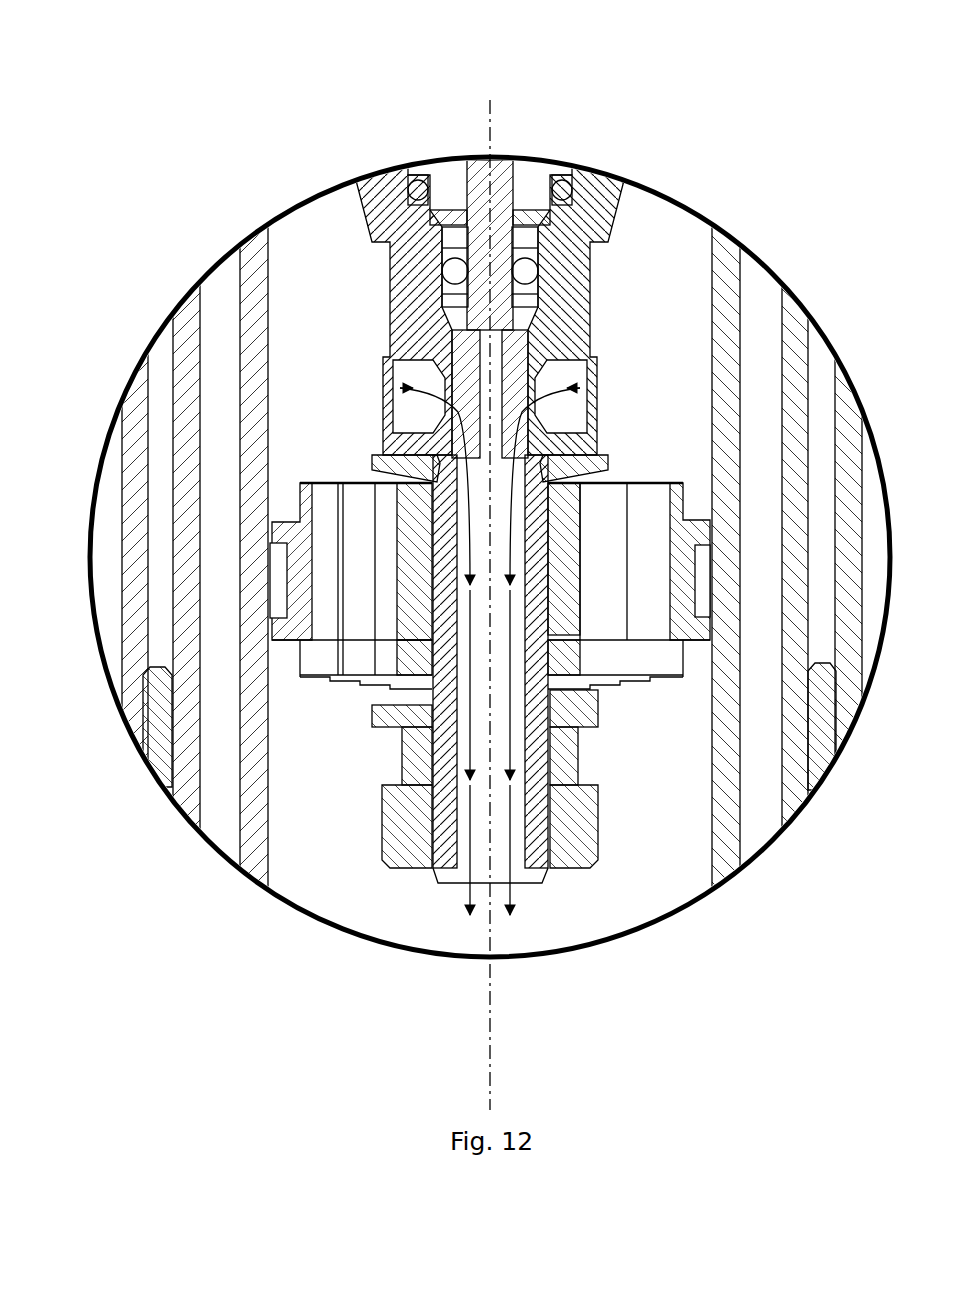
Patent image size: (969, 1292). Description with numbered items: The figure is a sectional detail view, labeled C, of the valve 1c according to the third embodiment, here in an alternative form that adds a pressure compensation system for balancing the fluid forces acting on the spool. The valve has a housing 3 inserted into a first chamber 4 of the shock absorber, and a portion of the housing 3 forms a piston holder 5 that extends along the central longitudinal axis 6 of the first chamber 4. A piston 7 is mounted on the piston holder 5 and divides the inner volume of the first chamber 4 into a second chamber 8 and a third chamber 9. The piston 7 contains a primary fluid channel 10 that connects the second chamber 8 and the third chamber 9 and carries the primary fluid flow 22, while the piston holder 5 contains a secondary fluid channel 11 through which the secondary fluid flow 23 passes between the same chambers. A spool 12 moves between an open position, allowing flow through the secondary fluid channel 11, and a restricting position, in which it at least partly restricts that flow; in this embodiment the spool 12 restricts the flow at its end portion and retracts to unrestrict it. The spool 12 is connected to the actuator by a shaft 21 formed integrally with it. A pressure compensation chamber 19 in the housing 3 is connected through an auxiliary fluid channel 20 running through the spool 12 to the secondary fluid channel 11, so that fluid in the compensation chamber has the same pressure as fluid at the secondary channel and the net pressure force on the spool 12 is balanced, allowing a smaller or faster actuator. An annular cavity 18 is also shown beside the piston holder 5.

The third chamber 9 is at (300, 723).
The piston 7 is at (307, 468).
The first chamber 4 is at (250, 255).
The valve 1c is at (253, 148).
The piston holder 5 is at (443, 550).
The second chamber 8 is at (365, 268).
The housing 3 is at (388, 210).
The pressure compensation chamber 19 is at (420, 205).
The auxiliary fluid channel 20 is at (462, 323).
The spool 12 is at (487, 353).
The central longitudinal axis 6 is at (482, 330).
The shaft 21 is at (498, 283).
The annular cavity 18 is at (590, 390).
The primary fluid channel 10 is at (358, 613).
The primary fluid flow 22 is at (413, 613).
The secondary fluid channel 11 is at (465, 858).
The secondary fluid flow 23 is at (503, 888).
The detail C is at (180, 807).